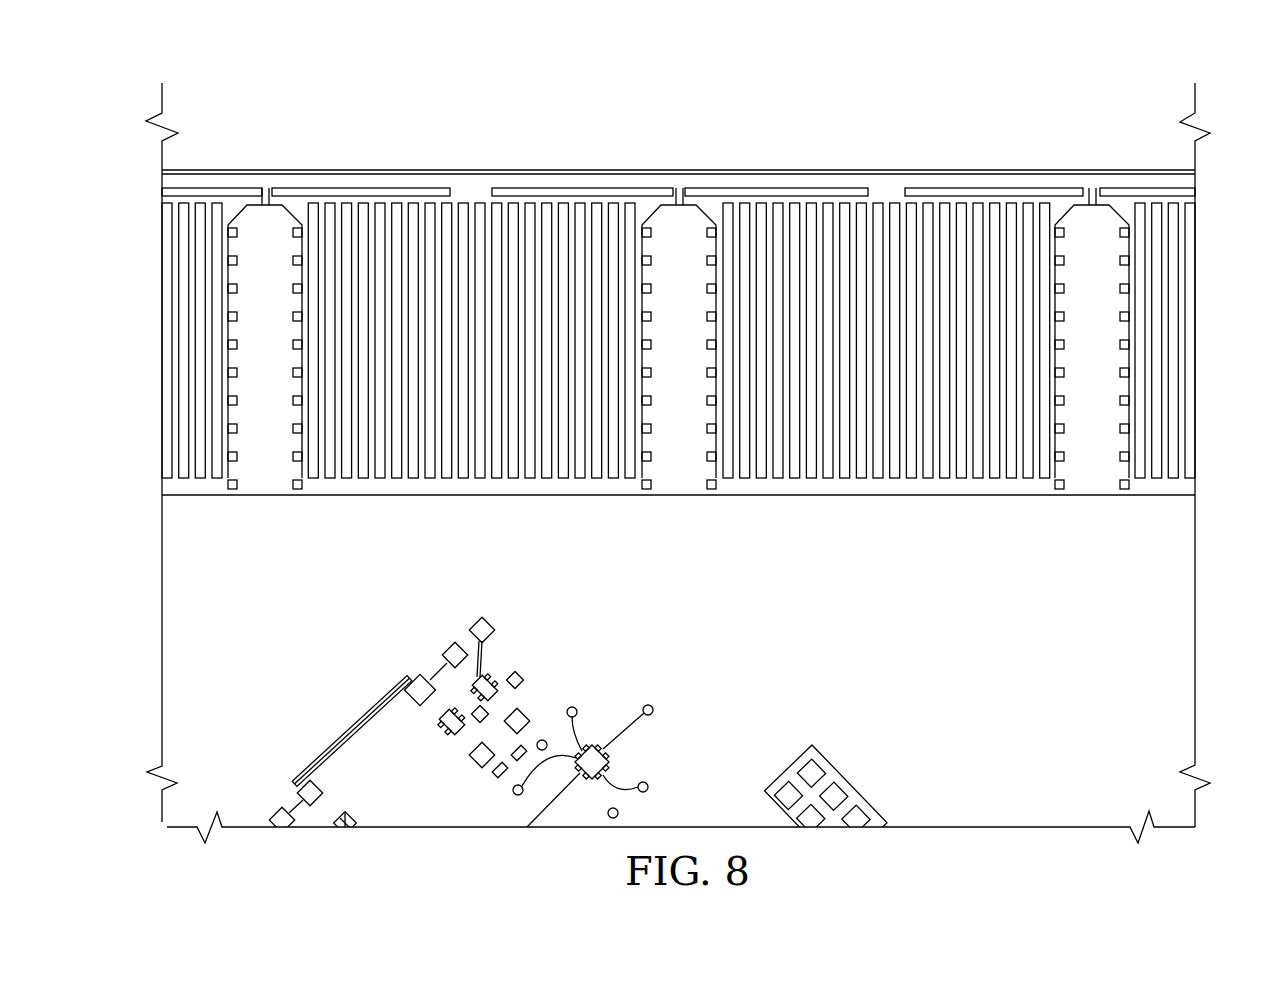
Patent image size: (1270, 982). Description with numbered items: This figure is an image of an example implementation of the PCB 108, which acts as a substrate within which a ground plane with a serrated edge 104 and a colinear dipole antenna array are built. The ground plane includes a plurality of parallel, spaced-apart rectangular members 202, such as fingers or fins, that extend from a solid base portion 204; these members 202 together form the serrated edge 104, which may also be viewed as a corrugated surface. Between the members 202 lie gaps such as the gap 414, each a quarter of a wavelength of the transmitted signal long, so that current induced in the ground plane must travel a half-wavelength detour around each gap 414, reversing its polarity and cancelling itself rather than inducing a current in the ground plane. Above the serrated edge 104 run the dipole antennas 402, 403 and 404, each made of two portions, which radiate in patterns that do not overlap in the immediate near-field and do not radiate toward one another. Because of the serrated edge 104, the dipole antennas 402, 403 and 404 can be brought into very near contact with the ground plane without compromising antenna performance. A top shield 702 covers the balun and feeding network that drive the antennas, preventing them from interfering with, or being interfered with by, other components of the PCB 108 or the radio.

The serrated edge 104 is at (468, 194).
The PCB 108 is at (1108, 92).
The rectangular members 202 is at (928, 212).
The base portion 204 is at (1188, 640).
The dipole antenna 402 is at (358, 188).
The dipole antenna 403 is at (583, 188).
The dipole antenna 404 is at (1000, 188).
The gap 414 is at (207, 208).
The top shield 702 is at (690, 225).